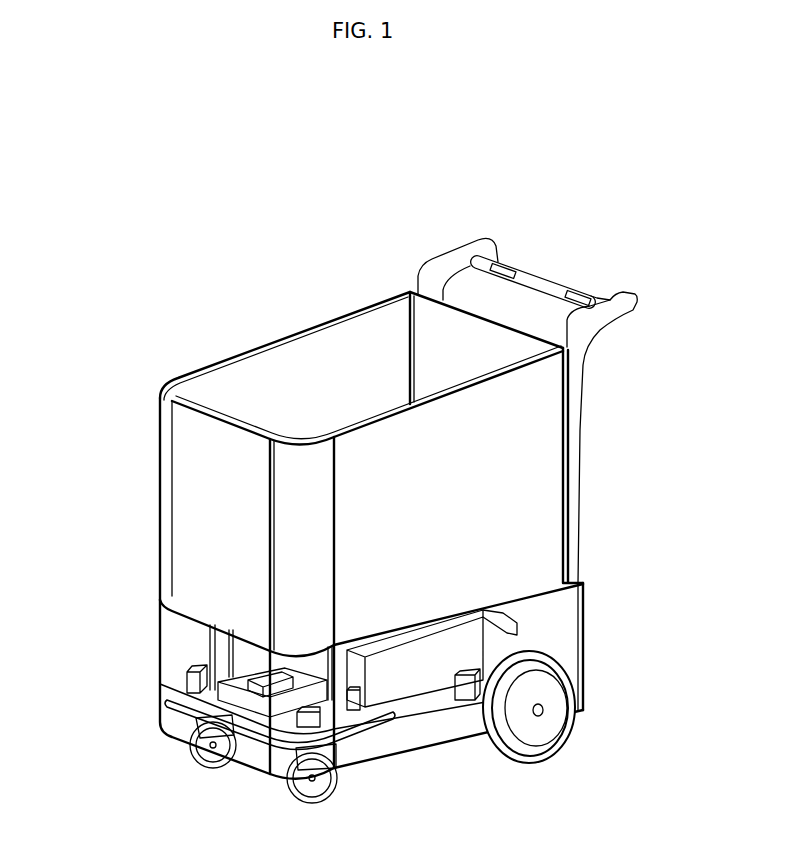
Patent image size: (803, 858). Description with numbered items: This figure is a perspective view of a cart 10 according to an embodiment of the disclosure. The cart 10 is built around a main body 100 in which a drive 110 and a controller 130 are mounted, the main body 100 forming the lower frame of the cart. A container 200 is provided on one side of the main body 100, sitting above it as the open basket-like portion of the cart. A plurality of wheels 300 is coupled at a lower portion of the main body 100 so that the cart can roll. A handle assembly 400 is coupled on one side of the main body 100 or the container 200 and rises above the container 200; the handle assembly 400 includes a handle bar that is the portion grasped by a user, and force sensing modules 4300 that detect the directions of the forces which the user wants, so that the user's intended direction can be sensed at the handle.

The cart 10 is at (624, 141).
The main body 100 is at (368, 693).
The drive 110 is at (483, 644).
The controller 130 is at (193, 678).
The container 200 is at (542, 474).
The wheels 300 is at (553, 737).
The handle assembly 400 is at (540, 456).
The force sensing modules 4300 is at (500, 272).